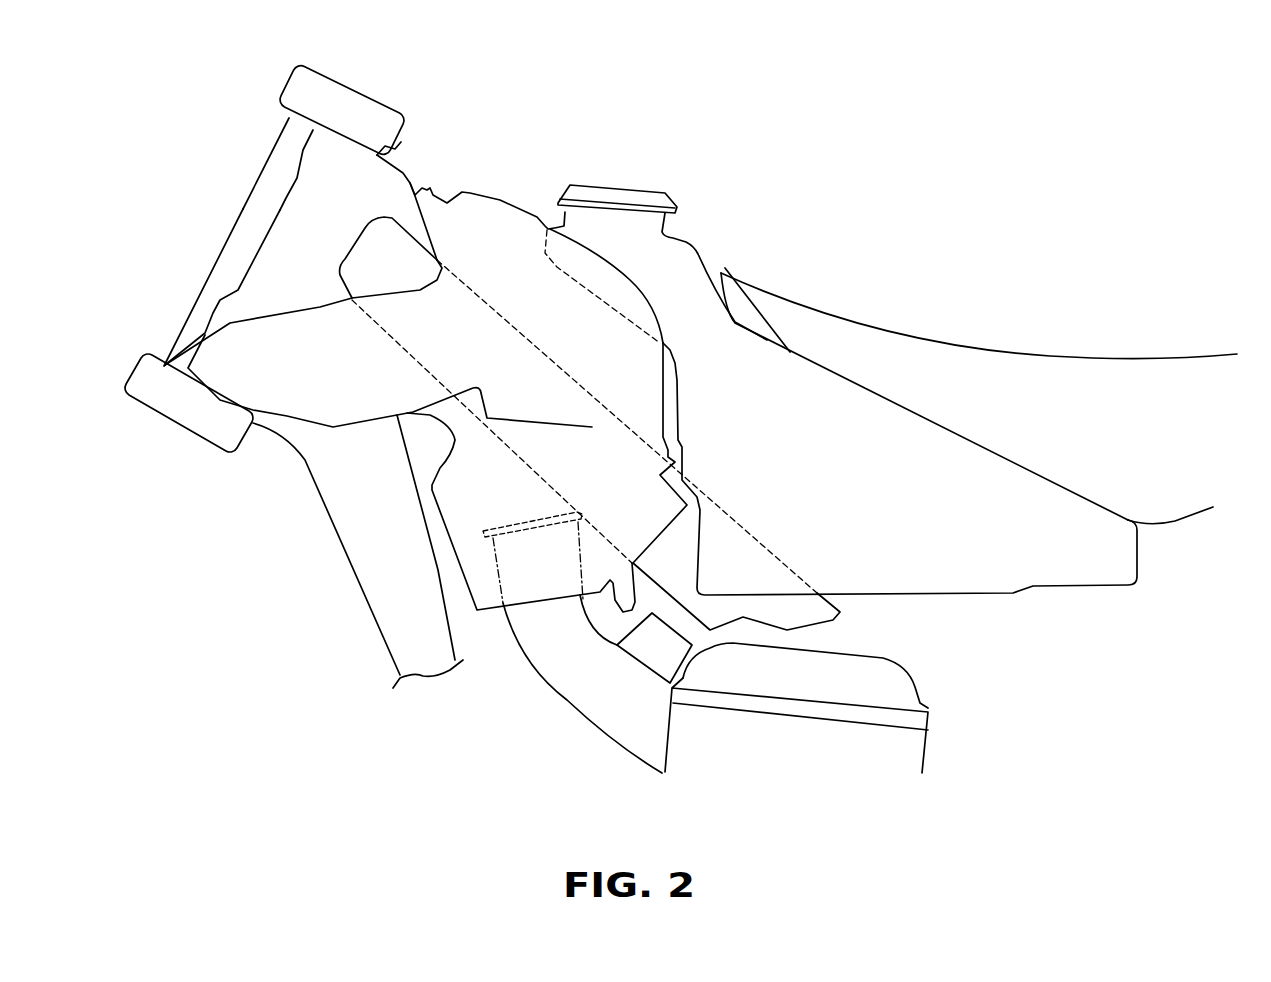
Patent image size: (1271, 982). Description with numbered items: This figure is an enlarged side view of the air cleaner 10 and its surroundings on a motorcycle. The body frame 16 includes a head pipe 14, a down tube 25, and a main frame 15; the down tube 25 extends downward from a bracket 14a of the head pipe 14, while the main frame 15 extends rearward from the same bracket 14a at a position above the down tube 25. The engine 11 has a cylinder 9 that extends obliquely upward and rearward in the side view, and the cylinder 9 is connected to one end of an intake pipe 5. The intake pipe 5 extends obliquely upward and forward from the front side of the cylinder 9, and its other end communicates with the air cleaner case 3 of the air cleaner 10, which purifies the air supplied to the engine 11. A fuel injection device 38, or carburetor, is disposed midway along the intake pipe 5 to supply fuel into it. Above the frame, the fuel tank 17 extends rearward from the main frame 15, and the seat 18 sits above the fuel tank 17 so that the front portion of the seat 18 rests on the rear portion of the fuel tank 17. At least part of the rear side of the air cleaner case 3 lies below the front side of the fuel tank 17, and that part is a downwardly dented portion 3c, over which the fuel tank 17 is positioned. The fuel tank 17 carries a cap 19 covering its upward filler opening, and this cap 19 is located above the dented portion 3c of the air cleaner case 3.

The air cleaner case 3 is at (490, 603).
The downwardly dented portion 3c is at (557, 263).
The intake pipe 5 is at (580, 712).
The cylinder 9 is at (913, 748).
The air cleaner 10 is at (510, 202).
The engine 11 is at (902, 660).
The head pipe 14 is at (279, 259).
The bracket 14a is at (313, 158).
The main frame 15 is at (400, 240).
The body frame 16 is at (310, 250).
The fuel tank 17 is at (683, 255).
The seat 18 is at (919, 333).
The cap 19 is at (637, 188).
The down tube 25 is at (360, 553).
The fuel injection device 38 is at (645, 653).